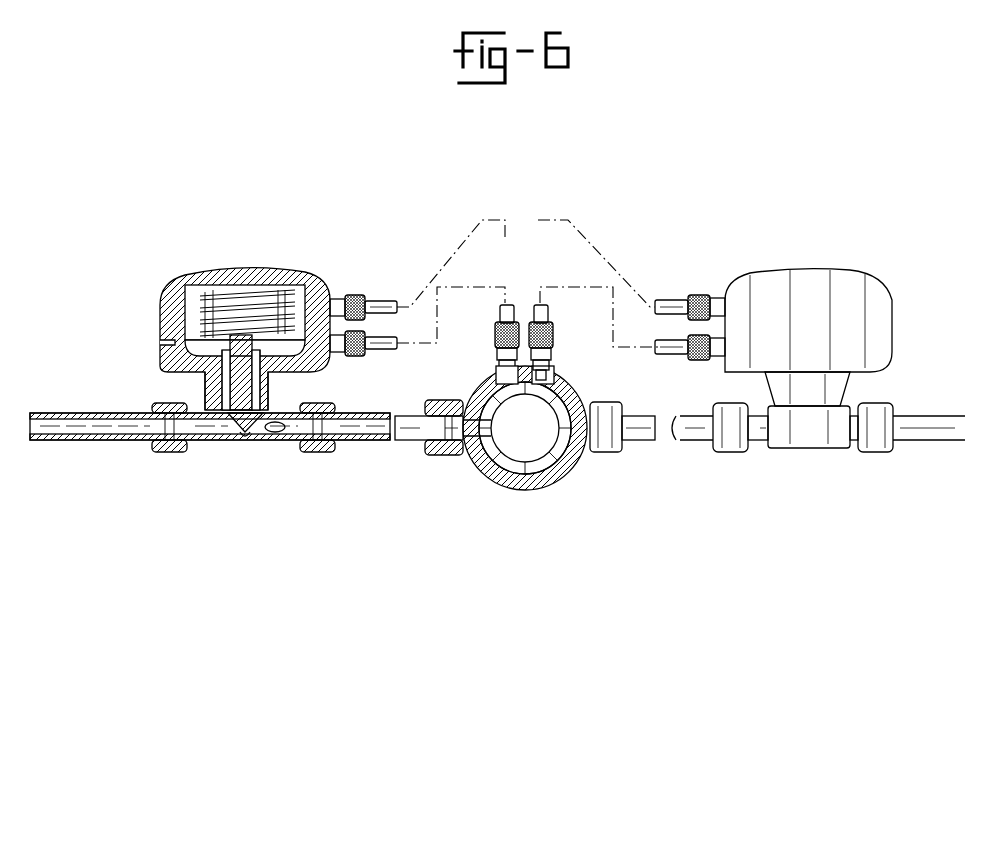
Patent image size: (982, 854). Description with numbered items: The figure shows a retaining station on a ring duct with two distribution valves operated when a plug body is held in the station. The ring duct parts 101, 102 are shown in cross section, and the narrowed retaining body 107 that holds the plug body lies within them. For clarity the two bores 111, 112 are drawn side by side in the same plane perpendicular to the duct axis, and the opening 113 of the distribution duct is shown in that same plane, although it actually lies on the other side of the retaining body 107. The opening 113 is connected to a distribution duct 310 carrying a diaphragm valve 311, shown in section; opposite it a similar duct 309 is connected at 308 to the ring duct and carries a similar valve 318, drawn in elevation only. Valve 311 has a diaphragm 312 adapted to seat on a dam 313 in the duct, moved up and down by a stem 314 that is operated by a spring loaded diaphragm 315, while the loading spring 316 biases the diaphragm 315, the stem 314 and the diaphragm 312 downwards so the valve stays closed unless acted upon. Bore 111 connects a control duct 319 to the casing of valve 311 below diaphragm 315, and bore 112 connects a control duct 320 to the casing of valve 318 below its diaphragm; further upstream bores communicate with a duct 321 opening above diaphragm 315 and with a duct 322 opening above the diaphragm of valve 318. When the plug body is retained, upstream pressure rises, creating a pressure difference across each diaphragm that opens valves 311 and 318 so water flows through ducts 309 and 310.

The ring duct part 101 is at (548, 470).
The ring duct part 102 is at (525, 458).
The narrowed retaining body 107 is at (508, 460).
The bore 111 is at (498, 380).
The bore 112 is at (555, 380).
The opening of the distribution duct 113 is at (478, 452).
The connection 308 is at (610, 440).
The distribution duct 309 is at (698, 445).
The distribution duct 310 is at (103, 440).
The diaphragm valve 311 is at (245, 445).
The diaphragm 312 is at (232, 440).
The dam 313 is at (275, 440).
The stem 314 is at (205, 378).
The spring loaded diaphragm 315 is at (160, 340).
The loading spring 316 is at (250, 284).
The diaphragm valve 318 is at (878, 302).
The control duct 319 is at (355, 356).
The control duct 320 is at (553, 345).
The control duct 321 is at (355, 295).
The control duct 322 is at (698, 295).